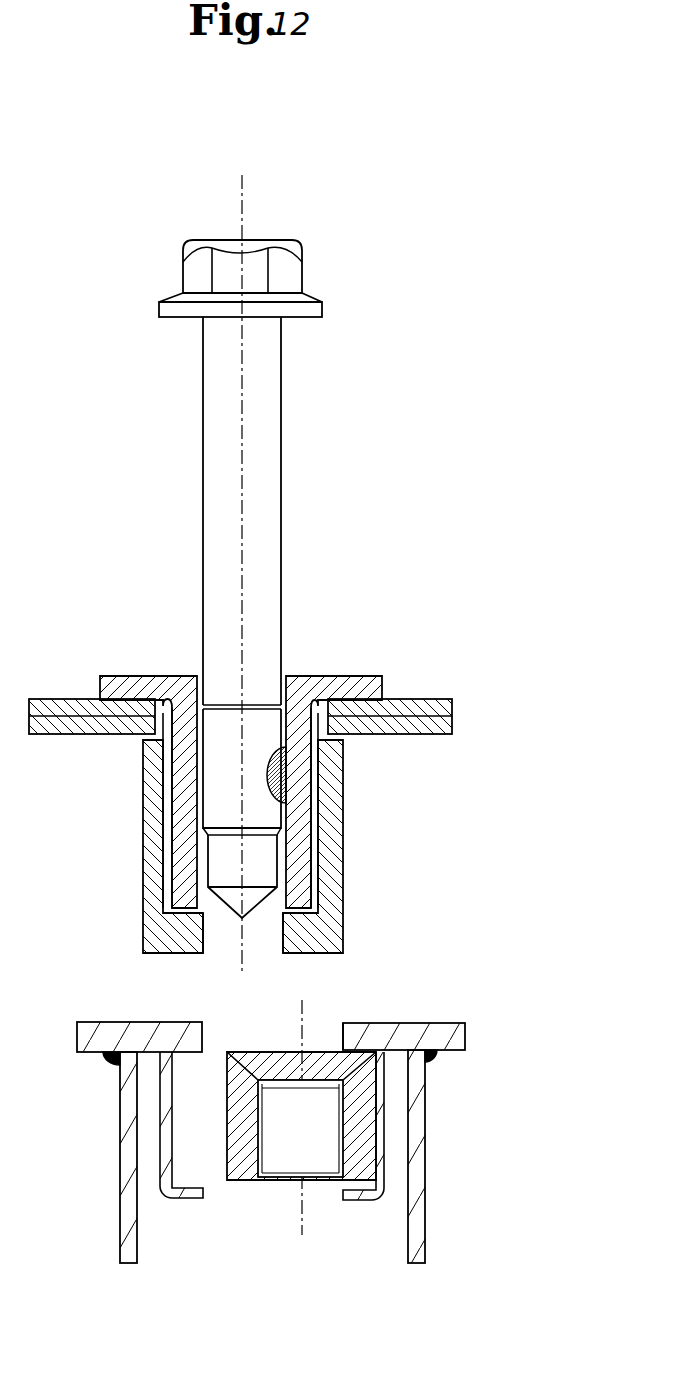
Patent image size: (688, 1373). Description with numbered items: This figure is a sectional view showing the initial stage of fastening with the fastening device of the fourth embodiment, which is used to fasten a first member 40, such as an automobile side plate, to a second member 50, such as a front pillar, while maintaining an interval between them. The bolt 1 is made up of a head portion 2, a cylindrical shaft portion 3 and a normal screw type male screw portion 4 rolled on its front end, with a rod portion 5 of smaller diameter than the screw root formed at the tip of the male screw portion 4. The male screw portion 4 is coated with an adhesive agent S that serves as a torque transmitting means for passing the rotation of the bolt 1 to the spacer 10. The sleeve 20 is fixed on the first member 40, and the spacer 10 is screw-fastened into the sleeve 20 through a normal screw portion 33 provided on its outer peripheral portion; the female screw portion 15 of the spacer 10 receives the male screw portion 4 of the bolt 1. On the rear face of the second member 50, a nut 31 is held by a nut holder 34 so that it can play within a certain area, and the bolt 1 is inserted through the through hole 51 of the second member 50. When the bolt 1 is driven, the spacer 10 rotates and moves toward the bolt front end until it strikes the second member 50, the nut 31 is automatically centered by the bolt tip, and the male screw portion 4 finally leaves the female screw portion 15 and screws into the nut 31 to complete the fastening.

The bolt 1 is at (254, 579).
The head portion 2 is at (288, 268).
The cylindrical shaft portion 3 is at (213, 525).
The male screw portion 4 is at (211, 767).
The rod portion 5 is at (166, 878).
The spacer 10 is at (332, 785).
The female screw portion 15 is at (285, 925).
The sleeve 20 is at (300, 838).
The normal screw portion 33 is at (313, 812).
The nut holder 34 is at (353, 1200).
The nut 31 is at (242, 1167).
The first member 40 is at (420, 702).
The second member 50 is at (294, 1097).
The through hole 51 is at (347, 1047).
The adhesive agent S is at (290, 767).